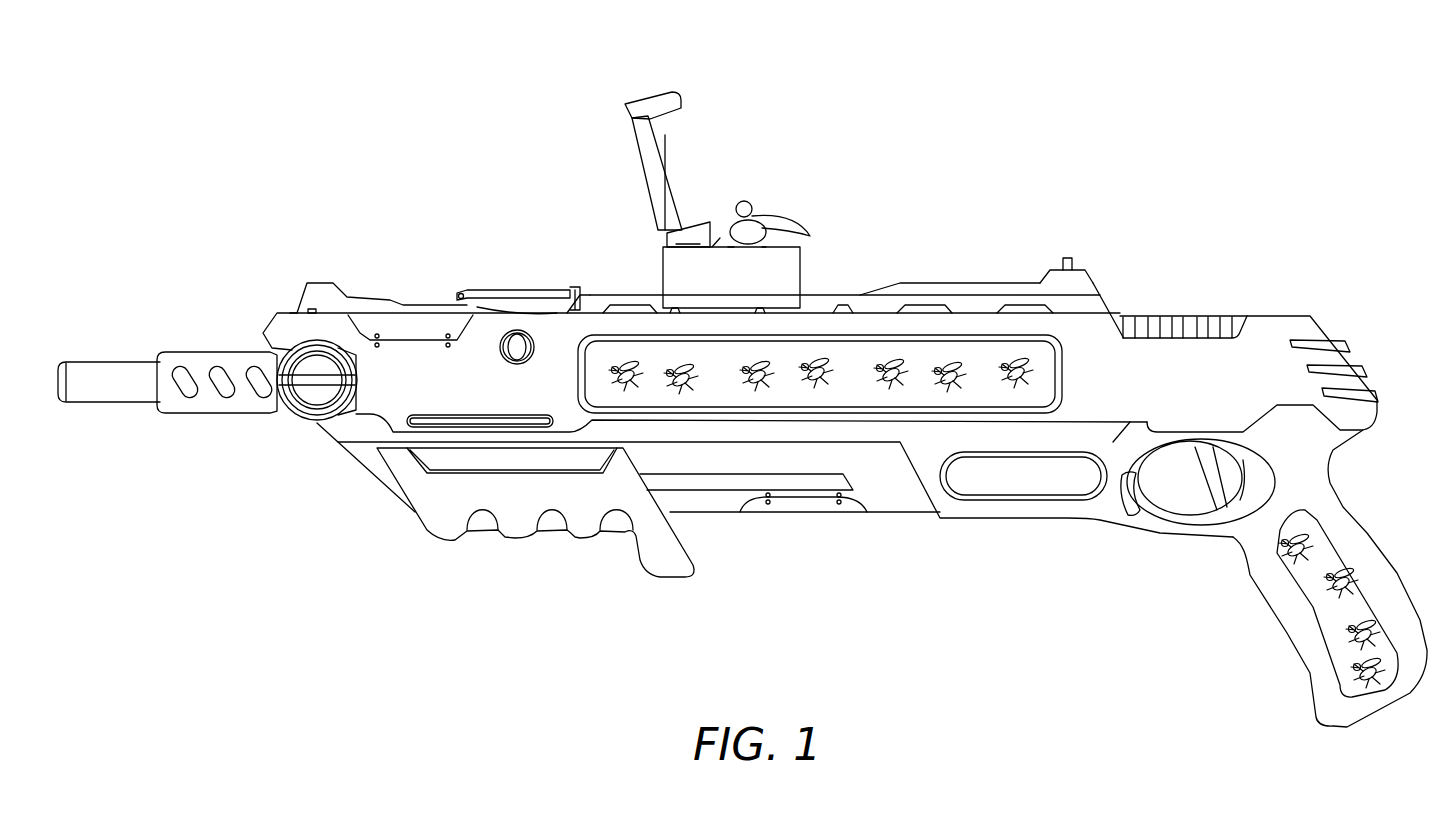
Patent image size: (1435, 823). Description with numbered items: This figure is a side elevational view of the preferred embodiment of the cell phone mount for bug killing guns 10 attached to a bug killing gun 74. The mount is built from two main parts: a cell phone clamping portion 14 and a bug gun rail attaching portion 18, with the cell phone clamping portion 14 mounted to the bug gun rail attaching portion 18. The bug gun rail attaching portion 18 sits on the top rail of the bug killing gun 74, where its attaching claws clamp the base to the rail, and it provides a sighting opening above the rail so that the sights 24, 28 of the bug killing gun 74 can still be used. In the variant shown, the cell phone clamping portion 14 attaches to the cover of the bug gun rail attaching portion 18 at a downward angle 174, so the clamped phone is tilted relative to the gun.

The cell phone mount for bug killing guns 10 is at (718, 430).
The cell phone clamping portion 14 is at (632, 137).
The downward angle 174 is at (717, 157).
The bug gun rail attaching portion 18 is at (800, 265).
The sight 24 is at (317, 283).
The sight 28 is at (1075, 258).
The bug killing gun 74 is at (1362, 527).